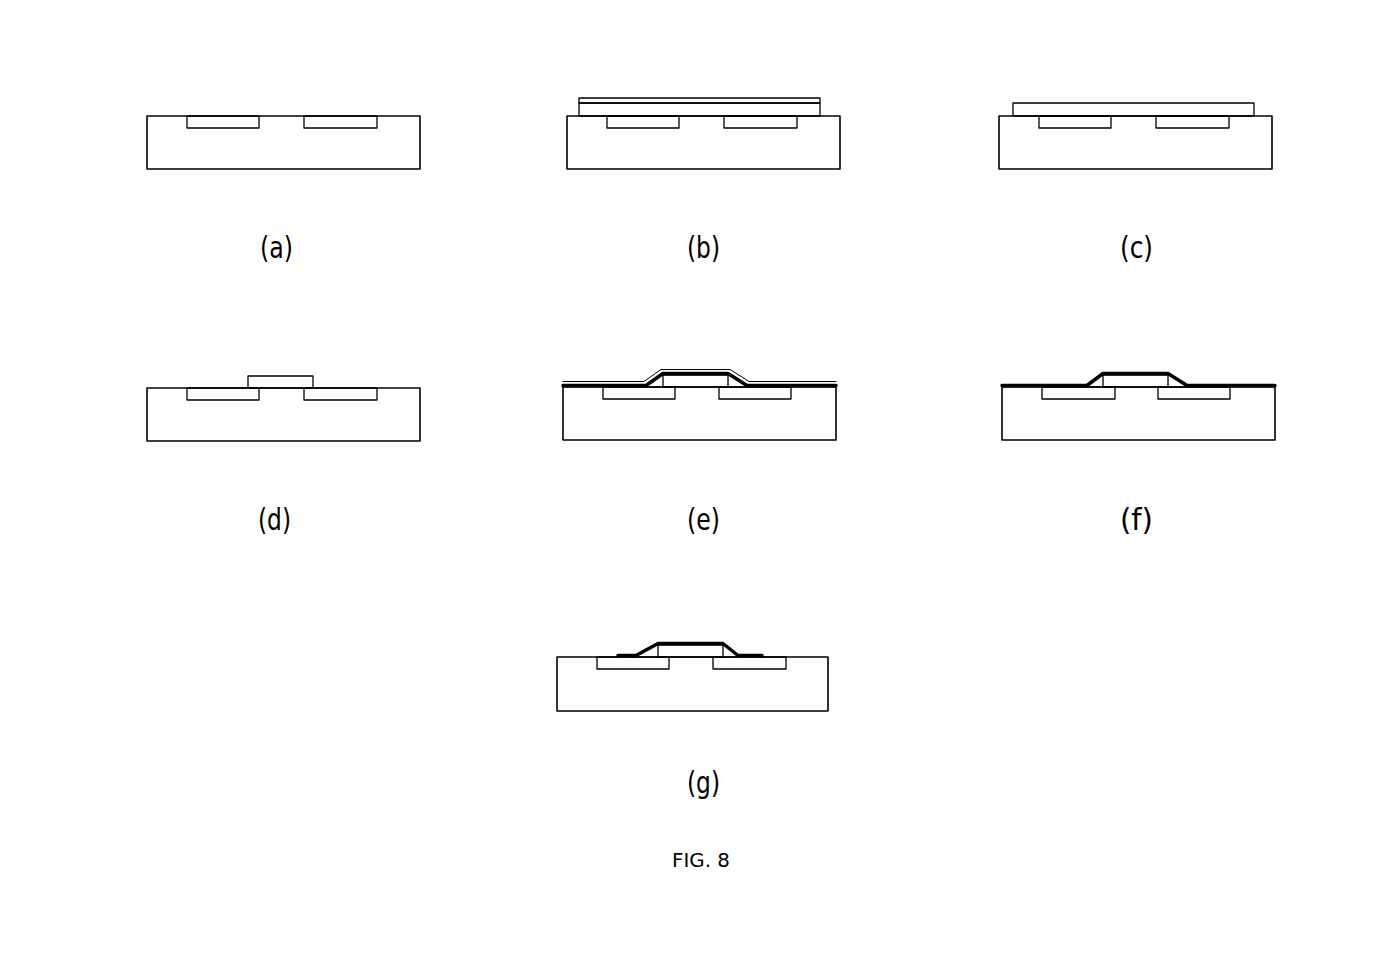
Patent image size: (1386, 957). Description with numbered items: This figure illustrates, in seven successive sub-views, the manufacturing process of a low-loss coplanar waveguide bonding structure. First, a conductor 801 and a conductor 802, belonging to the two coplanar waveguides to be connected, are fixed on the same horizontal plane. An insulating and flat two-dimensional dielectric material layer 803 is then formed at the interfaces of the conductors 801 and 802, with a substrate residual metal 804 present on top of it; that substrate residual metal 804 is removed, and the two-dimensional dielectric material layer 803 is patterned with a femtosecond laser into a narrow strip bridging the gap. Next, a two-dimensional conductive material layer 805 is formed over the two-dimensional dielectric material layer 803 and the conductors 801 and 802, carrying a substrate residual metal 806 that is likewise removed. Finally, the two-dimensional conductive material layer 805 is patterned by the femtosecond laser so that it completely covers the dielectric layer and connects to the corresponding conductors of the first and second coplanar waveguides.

The conductor 801 is at (355, 123).
The conductor 802 is at (218, 123).
The two-dimensional dielectric material layer 803 is at (822, 109).
The substrate residual metal 804 is at (608, 100).
The two-dimensional conductive material layer 805 is at (680, 368).
The substrate residual metal 806 is at (630, 378).